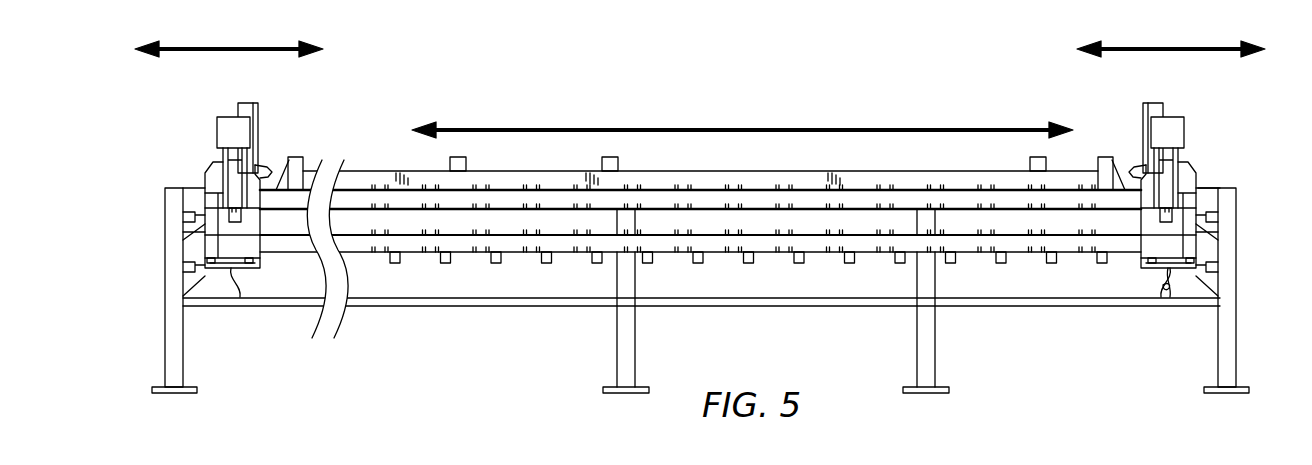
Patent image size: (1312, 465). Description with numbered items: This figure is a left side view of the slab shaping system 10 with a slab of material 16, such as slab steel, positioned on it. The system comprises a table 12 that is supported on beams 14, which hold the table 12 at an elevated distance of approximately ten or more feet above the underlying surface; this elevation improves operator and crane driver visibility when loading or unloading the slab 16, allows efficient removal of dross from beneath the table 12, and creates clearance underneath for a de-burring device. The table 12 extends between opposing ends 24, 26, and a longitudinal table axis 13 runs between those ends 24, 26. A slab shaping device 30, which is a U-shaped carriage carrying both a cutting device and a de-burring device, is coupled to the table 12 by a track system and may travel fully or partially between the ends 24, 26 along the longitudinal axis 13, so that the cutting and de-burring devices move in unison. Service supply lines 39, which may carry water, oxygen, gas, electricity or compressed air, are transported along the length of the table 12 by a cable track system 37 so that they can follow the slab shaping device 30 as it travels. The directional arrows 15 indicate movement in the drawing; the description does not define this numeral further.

The slab shaping system 10 is at (736, 98).
The table 12 is at (1238, 241).
The longitudinal table axis 13 is at (513, 126).
The beams 14 is at (620, 332).
The direction of movement of tool heads 15 is at (178, 45).
The slab of material 16 is at (728, 175).
The end of table 24 is at (1236, 171).
The end of table 26 is at (259, 100).
The slab shaping device 30 is at (1177, 110).
The cable track system 37 is at (1035, 302).
The service supply lines 39 is at (1165, 288).